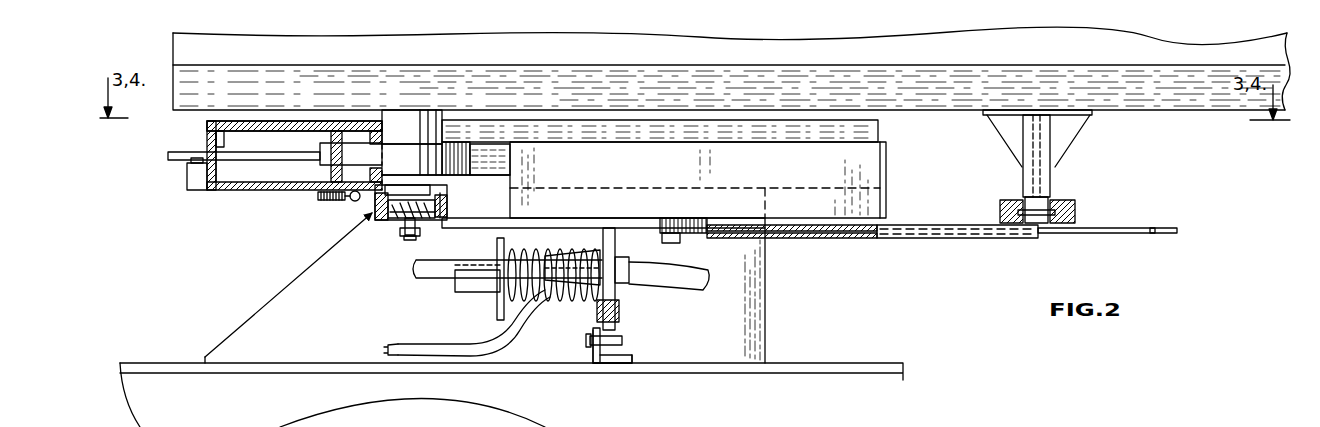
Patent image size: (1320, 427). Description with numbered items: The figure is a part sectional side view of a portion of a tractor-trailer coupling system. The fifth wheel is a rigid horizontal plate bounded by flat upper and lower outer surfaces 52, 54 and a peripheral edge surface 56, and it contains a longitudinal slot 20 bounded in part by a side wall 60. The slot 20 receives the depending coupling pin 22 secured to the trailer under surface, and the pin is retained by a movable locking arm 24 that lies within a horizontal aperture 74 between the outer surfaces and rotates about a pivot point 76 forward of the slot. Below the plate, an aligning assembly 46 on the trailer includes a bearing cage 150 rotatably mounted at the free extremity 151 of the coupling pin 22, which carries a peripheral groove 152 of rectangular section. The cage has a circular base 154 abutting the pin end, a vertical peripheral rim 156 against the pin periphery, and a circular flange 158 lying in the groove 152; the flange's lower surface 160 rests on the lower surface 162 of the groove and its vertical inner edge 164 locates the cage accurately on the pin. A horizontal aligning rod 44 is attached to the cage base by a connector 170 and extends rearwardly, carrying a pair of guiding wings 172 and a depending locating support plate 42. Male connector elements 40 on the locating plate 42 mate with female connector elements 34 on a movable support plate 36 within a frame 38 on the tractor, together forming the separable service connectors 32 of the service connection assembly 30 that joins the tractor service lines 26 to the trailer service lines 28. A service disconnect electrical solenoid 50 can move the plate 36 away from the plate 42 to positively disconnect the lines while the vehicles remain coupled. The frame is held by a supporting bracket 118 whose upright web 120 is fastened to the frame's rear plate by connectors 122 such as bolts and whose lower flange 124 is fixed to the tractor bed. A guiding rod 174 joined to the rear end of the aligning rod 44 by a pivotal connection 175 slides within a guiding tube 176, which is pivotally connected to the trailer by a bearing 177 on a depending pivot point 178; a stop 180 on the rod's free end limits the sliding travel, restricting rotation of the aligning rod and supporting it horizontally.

The slot 20 is at (476, 140).
The coupling pin 22 is at (393, 128).
The locking arm 24 is at (330, 160).
The service lines 26 is at (412, 345).
The service lines 28 is at (699, 282).
The service connection assembly 30 is at (560, 318).
The service connectors 32 is at (562, 272).
The female service connector elements 34 is at (545, 266).
The movable support plate 36 is at (619, 304).
The frame 38 is at (510, 305).
The male connector elements 40 is at (628, 283).
The locating support plate 42 is at (613, 237).
The aligning rod 44 is at (488, 222).
The aligning assembly 46 is at (419, 243).
The service disconnect electrical solenoid 50 is at (470, 288).
The upper outer surface 52 is at (293, 121).
The lower outer surface 54 is at (247, 190).
The peripheral edge surface 56 is at (207, 136).
The side wall 60 is at (218, 140).
The aperture 74 is at (247, 168).
The pivot point 76 is at (337, 131).
The supporting bracket 118 is at (624, 366).
The upright web 120 is at (596, 333).
The connectors 122 is at (621, 341).
The lower flange 124 is at (617, 364).
The bearing cage 150 is at (342, 265).
The free extremity 151 is at (416, 239).
The peripheral groove 152 is at (478, 170).
The circular base 154 is at (393, 221).
The peripheral rim 156 is at (368, 200).
The circular flange 158 is at (384, 198).
The lower surface 160 is at (412, 167).
The lower surface of the groove 162 is at (442, 221).
The vertical inner edge 164 is at (441, 206).
The connector 170 is at (405, 238).
The guiding wings 172 is at (870, 168).
The guiding rod 174 is at (693, 239).
The pivotal connection 175 is at (682, 219).
The guiding tube 176 is at (945, 240).
The bearing 177 is at (1076, 212).
The pivot point 178 is at (1068, 158).
The stop 180 is at (1153, 229).